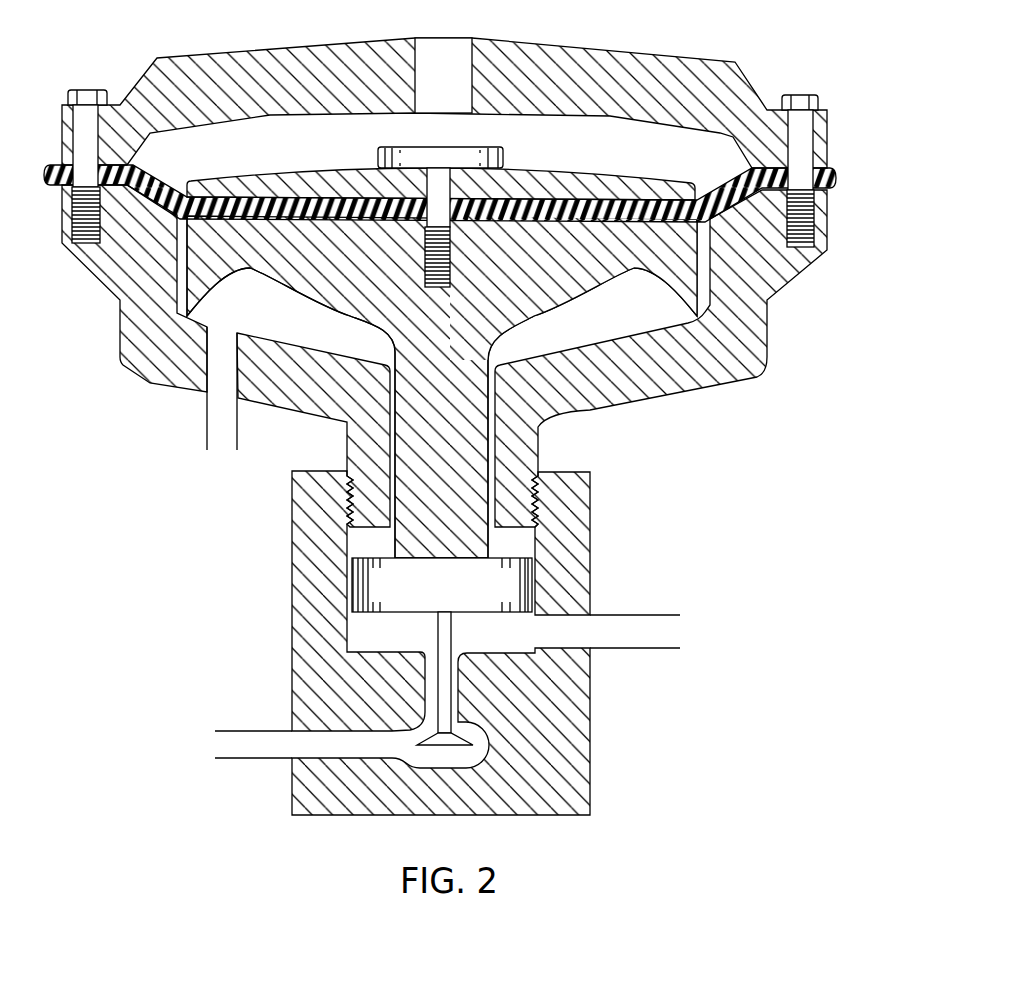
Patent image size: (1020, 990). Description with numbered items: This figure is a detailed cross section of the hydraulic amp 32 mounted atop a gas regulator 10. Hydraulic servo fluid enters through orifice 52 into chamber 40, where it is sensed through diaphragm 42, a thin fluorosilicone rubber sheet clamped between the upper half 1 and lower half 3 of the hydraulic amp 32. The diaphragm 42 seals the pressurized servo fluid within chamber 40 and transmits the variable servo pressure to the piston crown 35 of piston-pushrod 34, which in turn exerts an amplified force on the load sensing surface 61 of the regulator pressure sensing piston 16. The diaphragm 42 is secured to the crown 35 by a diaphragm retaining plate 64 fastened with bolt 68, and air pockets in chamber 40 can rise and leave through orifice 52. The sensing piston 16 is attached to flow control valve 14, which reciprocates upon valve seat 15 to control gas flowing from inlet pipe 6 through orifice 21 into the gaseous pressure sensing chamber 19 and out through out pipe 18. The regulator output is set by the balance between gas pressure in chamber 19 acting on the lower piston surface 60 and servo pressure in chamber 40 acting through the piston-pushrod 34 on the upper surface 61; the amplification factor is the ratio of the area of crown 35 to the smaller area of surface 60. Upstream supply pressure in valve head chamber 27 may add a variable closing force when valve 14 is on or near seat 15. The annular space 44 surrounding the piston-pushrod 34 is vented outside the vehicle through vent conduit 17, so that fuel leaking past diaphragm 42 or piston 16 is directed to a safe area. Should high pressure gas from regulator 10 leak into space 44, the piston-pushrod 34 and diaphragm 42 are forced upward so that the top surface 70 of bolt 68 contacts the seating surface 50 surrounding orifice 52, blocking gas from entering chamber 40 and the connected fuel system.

The upper half 1 is at (625, 99).
The lower half 3 is at (444, 356).
The inlet pipe 6 is at (256, 757).
The regulator 10 is at (292, 637).
The flow control valve 14 is at (413, 737).
The valve seat 15 is at (459, 716).
The regulator pressure sensing piston 16 is at (442, 585).
The vent conduit 17 is at (206, 432).
The out pipe 18 is at (632, 652).
The gaseous pressure sensing chamber 19 is at (373, 646).
The orifice 21 is at (410, 713).
The valve head chamber 27 is at (457, 768).
The hydraulic amp 32 is at (120, 360).
The piston-pushrod 34 is at (423, 417).
The piston crown 35 is at (577, 223).
The chamber 40 is at (273, 156).
The diaphragm 42 is at (829, 190).
The annular space 44 is at (243, 322).
The seating surface 50 is at (488, 126).
The orifice 52 is at (428, 84).
The lower piston surface 60 is at (520, 614).
The load sensing surface 61 is at (450, 560).
The plate 64 is at (585, 176).
The bolt 68 is at (503, 160).
The top surface 70 is at (471, 145).